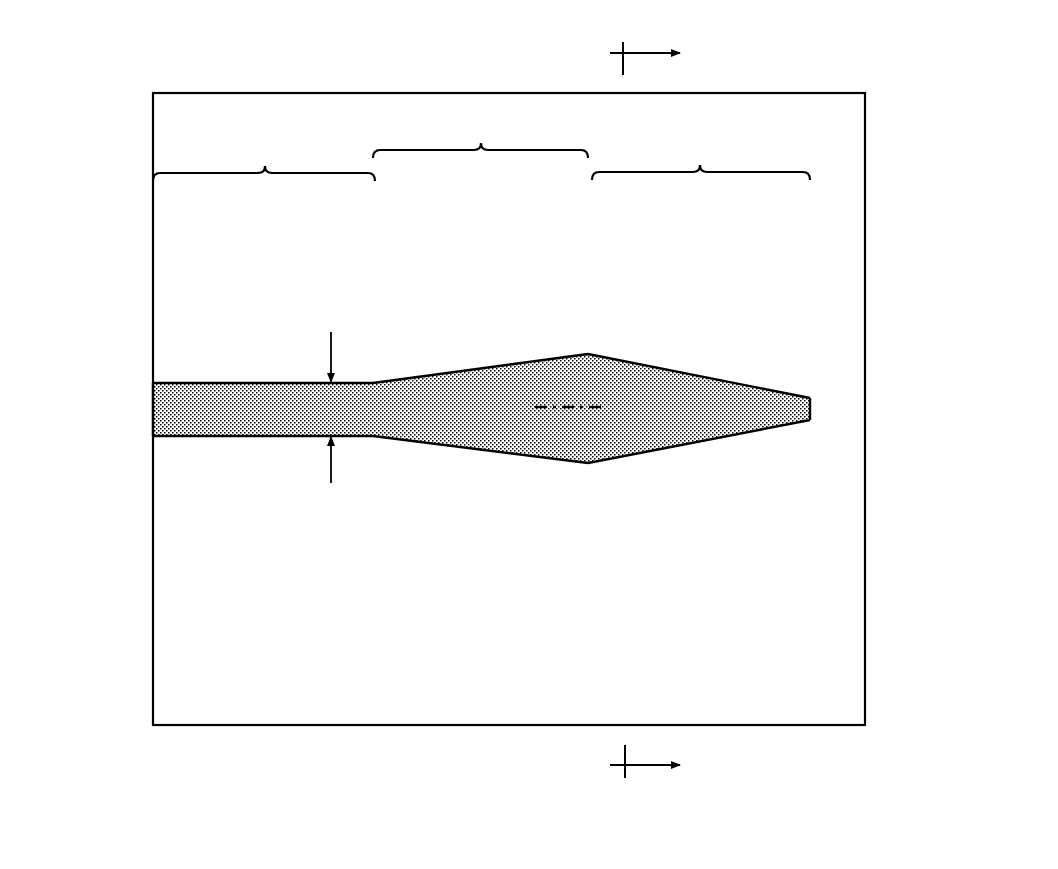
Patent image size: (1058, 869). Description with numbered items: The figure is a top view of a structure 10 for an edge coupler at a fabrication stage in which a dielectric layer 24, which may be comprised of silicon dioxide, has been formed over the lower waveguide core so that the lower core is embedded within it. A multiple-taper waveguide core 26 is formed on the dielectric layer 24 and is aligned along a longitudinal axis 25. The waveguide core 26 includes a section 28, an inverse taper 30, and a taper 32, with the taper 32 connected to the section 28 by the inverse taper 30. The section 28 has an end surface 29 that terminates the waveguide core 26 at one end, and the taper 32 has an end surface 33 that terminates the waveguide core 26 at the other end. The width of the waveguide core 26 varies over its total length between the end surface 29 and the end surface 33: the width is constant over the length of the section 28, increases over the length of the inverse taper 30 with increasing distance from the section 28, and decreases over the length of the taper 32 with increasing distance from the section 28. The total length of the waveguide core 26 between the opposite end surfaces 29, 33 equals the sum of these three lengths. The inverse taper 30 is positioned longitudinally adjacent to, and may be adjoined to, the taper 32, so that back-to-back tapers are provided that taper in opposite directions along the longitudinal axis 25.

The structure 10 is at (132, 75).
The dielectric layer 24 is at (218, 652).
The longitudinal axis 25 is at (568, 407).
The multiple-taper waveguide core 26 is at (467, 281).
The section 28 is at (272, 410).
The end surface 29 is at (153, 410).
The inverse taper 30 is at (480, 425).
The taper 32 is at (704, 420).
The end surface 33 is at (810, 410).